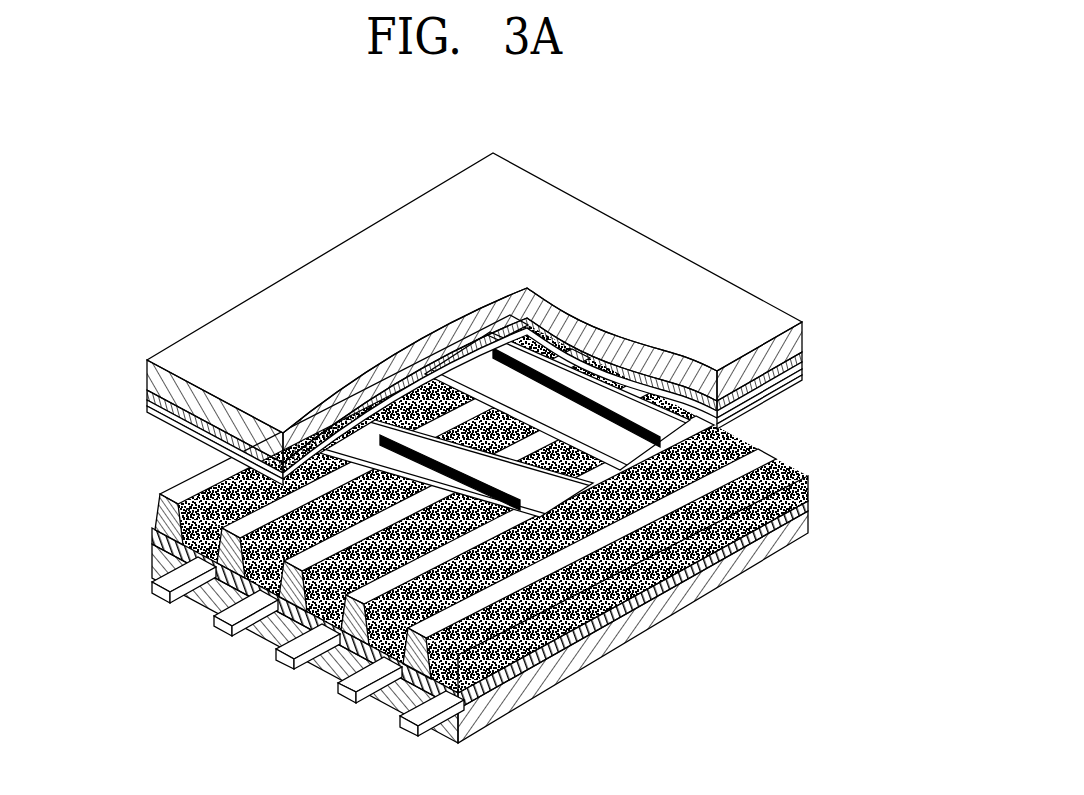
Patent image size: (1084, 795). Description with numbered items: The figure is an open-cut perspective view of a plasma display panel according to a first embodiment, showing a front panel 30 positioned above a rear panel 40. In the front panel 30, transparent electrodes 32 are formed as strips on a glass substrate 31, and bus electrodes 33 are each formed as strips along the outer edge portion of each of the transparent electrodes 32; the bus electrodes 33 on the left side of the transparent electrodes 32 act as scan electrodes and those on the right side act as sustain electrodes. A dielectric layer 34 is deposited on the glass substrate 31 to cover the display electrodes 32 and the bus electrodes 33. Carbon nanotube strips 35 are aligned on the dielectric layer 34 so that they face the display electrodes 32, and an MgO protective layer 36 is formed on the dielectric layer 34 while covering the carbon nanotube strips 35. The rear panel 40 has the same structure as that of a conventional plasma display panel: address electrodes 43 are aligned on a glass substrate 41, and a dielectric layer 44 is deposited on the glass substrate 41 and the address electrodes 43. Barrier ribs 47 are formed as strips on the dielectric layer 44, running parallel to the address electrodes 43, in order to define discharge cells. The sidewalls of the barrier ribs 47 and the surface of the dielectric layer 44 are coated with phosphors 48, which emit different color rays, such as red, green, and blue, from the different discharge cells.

The front panel 30 is at (514, 335).
The glass substrate 31 is at (682, 418).
The transparent electrodes 32 is at (733, 405).
The bus electrodes 33 is at (722, 432).
The dielectric layer 34 is at (805, 357).
The carbon nanotube strips 35 is at (762, 452).
The MgO protective layer 36 is at (805, 368).
The rear panel 40 is at (493, 540).
The glass substrate 41 is at (814, 525).
The address electrodes 43 is at (338, 693).
The dielectric layer 44 is at (812, 506).
The barrier ribs 47 is at (152, 533).
The phosphors 48 is at (197, 493).